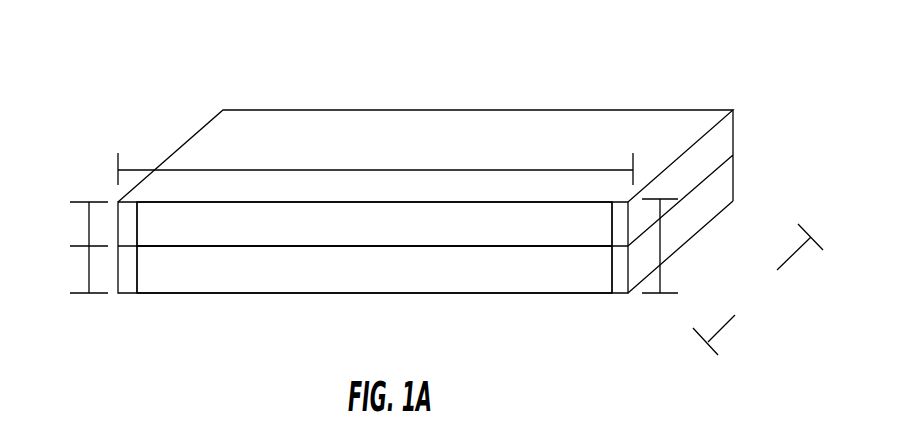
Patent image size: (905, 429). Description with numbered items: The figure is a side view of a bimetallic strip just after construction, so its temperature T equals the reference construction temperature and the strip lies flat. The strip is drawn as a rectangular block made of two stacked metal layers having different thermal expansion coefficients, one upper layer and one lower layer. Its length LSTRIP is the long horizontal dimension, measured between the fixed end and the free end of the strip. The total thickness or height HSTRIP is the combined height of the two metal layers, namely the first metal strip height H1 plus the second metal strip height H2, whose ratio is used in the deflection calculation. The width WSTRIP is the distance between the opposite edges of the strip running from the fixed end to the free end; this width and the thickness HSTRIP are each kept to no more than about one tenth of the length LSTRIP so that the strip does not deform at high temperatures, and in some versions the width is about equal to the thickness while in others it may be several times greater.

The temperature of the bimetallic strip T is at (425, 229).
The strip length LSTRIP is at (375, 155).
The first metal strip height H1 is at (69, 224).
The second metal strip height H2 is at (69, 271).
The strip thickness HSTRIP is at (699, 246).
The strip width WSTRIP is at (758, 289).